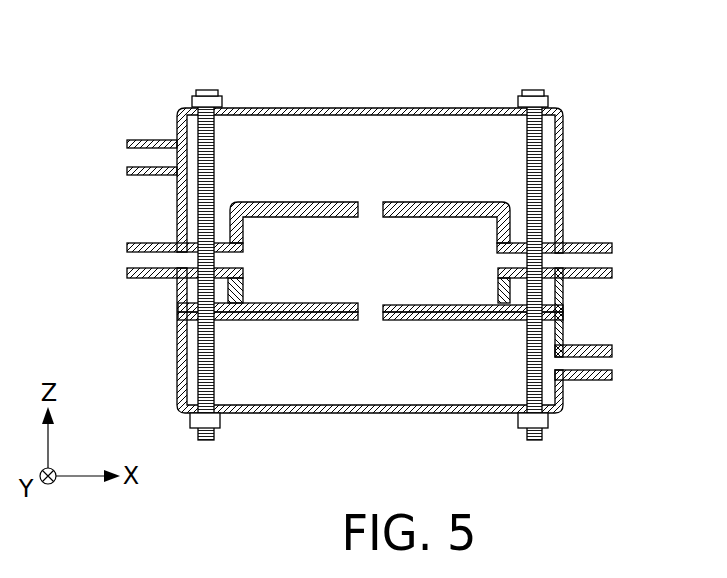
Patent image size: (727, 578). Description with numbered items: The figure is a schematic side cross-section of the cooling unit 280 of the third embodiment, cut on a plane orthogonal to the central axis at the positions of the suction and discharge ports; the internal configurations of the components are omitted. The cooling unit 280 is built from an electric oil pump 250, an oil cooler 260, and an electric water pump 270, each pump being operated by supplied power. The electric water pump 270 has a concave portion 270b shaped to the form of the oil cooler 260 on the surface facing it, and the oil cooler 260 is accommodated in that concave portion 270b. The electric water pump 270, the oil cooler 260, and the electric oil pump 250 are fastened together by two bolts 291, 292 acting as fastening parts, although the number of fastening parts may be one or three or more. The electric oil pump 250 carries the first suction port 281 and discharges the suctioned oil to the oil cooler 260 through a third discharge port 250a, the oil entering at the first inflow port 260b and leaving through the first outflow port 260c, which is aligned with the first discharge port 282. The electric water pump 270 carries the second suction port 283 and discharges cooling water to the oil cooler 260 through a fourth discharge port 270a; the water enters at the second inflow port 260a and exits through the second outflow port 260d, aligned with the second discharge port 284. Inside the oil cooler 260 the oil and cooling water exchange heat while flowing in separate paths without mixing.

The cooling unit 280 is at (597, 64).
The electric water pump 270 is at (564, 147).
The fourth discharge port 270a is at (362, 213).
The concave portion 270b is at (515, 223).
The oil cooler 260 is at (345, 258).
The second inflow port 260a is at (367, 218).
The first inflow port 260b is at (400, 292).
The first outflow port 260c is at (500, 272).
The second outflow port 260d is at (243, 266).
The electric oil pump 250 is at (375, 361).
The third discharge port 250a is at (400, 292).
The first suction port 281 is at (590, 372).
The first discharge port 282 is at (593, 255).
The second suction port 283 is at (155, 167).
The second discharge port 284 is at (155, 270).
The bolt 291 is at (213, 145).
The bolt 292 is at (527, 148).